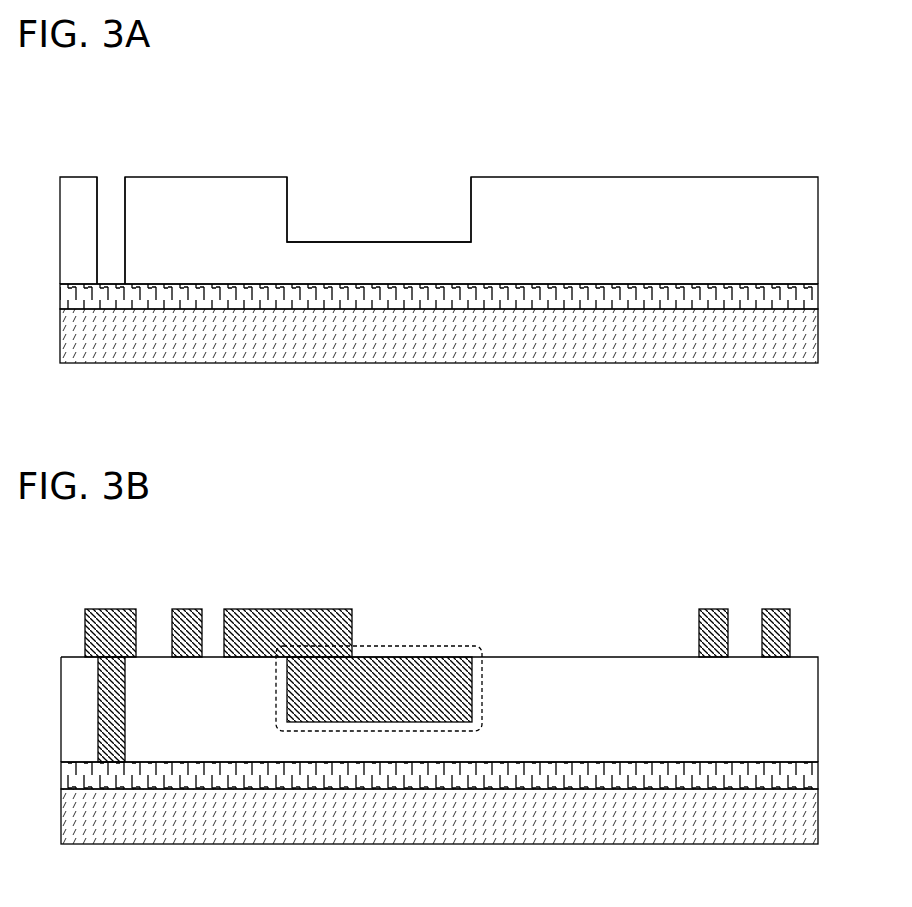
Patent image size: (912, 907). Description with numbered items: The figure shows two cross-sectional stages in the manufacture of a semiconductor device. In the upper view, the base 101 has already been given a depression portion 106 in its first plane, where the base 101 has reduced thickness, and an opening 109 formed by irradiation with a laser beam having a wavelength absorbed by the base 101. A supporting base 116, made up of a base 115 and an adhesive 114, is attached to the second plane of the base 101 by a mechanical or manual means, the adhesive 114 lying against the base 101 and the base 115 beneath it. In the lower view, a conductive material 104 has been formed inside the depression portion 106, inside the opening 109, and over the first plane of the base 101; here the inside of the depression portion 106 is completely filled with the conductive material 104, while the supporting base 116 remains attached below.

In FIG. 3A, the base 101 is at (604, 181).
In FIG. 3B, the base 101 is at (589, 670).
In FIG. 3B, the conductive material 104 is at (110, 617).
In FIG. 3A, the depression portion 106 is at (374, 192).
In FIG. 3B, the depression portion 106 is at (430, 642).
In FIG. 3A, the opening 109 is at (112, 180).
In FIG. 3A, the adhesive 114 is at (283, 297).
In FIG. 3B, the adhesive 114 is at (439, 775).
In FIG. 3A, the base 115 is at (242, 432).
In FIG. 3B, the base 115 is at (439, 816).
In FIG. 3A, the supporting base 116 is at (439, 397).